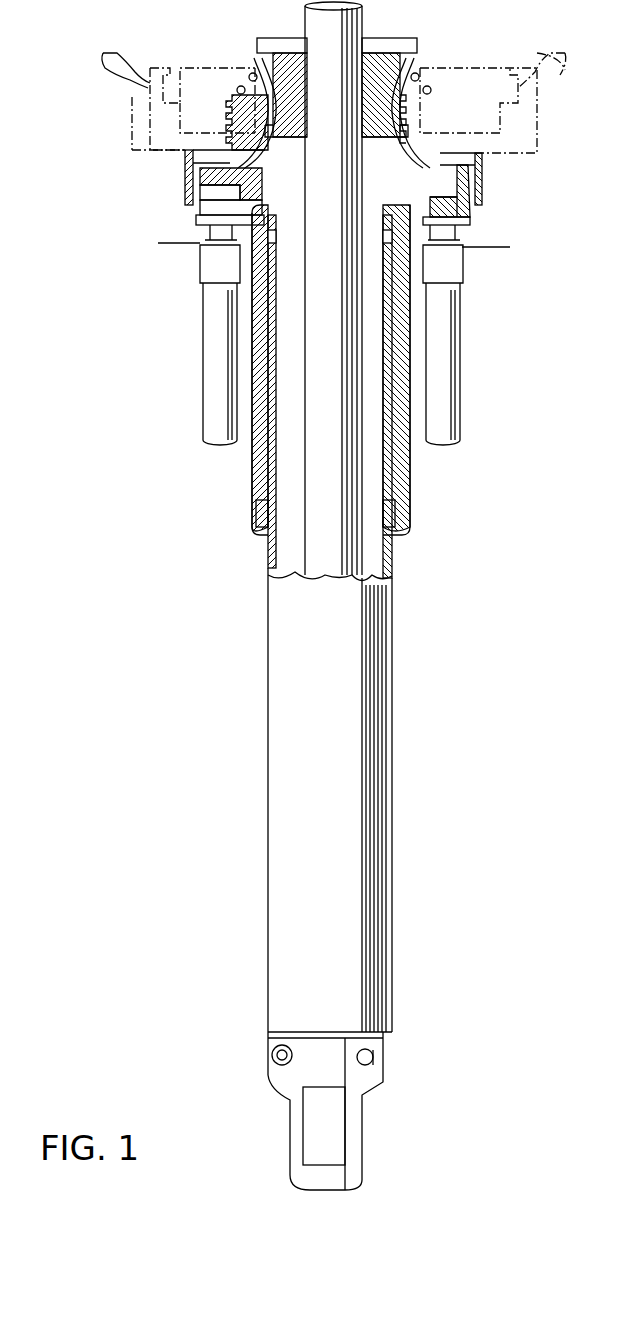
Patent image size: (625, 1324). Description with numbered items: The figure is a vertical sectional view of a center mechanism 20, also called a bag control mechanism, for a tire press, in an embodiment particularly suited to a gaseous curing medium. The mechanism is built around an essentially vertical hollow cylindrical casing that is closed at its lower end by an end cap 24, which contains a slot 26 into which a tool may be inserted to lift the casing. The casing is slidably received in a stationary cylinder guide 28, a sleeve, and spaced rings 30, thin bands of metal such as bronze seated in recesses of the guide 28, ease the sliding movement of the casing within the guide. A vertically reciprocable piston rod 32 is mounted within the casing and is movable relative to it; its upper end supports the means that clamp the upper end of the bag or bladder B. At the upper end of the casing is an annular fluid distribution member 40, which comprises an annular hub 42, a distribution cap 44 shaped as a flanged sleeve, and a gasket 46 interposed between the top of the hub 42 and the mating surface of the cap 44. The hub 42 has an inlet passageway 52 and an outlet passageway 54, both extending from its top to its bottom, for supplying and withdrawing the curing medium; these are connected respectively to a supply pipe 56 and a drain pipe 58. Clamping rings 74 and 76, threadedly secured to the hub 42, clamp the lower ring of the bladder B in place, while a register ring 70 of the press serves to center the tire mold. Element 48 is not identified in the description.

The center mechanism 20 is at (160, 783).
The end cap 24 is at (365, 1093).
The slot 26 is at (345, 1157).
The cylinder guide 28 is at (410, 520).
The spaced rings 30 is at (276, 240).
The piston rod 32 is at (365, 12).
The fluid distribution member 40 is at (450, 15).
The annular hub 42 is at (205, 190).
The distribution cap 44 is at (285, 45).
The gasket 46 is at (415, 56).
The sleeve 48 is at (276, 280).
The inlet passageway 52 is at (450, 207).
The outlet passageway 54 is at (212, 208).
The supply pipe 56 is at (455, 330).
The drain pipe 58 is at (205, 396).
The register ring 70 is at (190, 175).
The clamping ring 74 is at (200, 67).
The clamping ring 76 is at (130, 130).
The bladder B is at (103, 78).